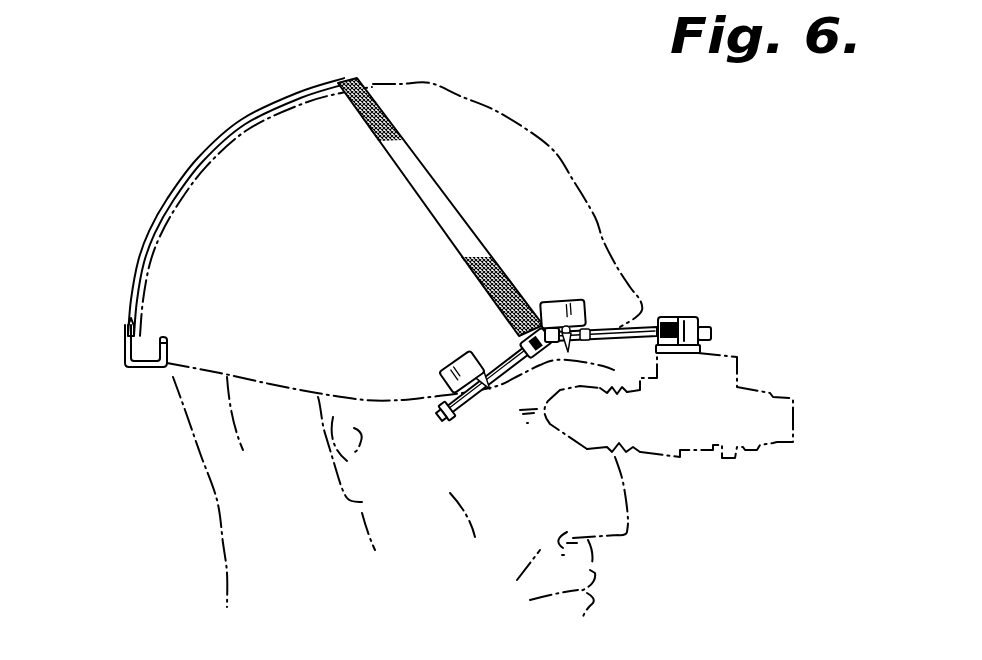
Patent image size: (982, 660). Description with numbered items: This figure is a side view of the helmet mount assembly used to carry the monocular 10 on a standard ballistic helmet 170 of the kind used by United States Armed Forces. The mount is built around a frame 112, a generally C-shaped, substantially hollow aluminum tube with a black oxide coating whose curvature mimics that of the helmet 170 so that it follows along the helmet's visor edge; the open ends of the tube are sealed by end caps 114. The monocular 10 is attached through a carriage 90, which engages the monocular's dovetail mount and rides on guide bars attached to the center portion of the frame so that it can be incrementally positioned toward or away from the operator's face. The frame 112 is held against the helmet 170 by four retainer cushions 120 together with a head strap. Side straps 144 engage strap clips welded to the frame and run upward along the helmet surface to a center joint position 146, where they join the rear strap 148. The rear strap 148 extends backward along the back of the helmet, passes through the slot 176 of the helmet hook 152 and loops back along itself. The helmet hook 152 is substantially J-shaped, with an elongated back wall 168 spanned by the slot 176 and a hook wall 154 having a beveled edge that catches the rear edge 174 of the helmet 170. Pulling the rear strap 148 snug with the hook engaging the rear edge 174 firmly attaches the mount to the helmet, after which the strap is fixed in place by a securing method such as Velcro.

The monocular 10 is at (737, 470).
The carriage 90 is at (714, 304).
The frame 112 is at (593, 318).
The end caps 114 is at (450, 411).
The retainer cushions 120 is at (560, 292).
The side straps 144 is at (416, 190).
The center joint position 146 is at (347, 78).
The rear strap 148 is at (237, 120).
The helmet hook 152 is at (147, 386).
The hook wall 154 is at (167, 350).
The back wall 168 is at (123, 363).
The ballistic helmet 170 is at (513, 127).
The rear edge 174 is at (245, 434).
The slot 176 is at (128, 337).